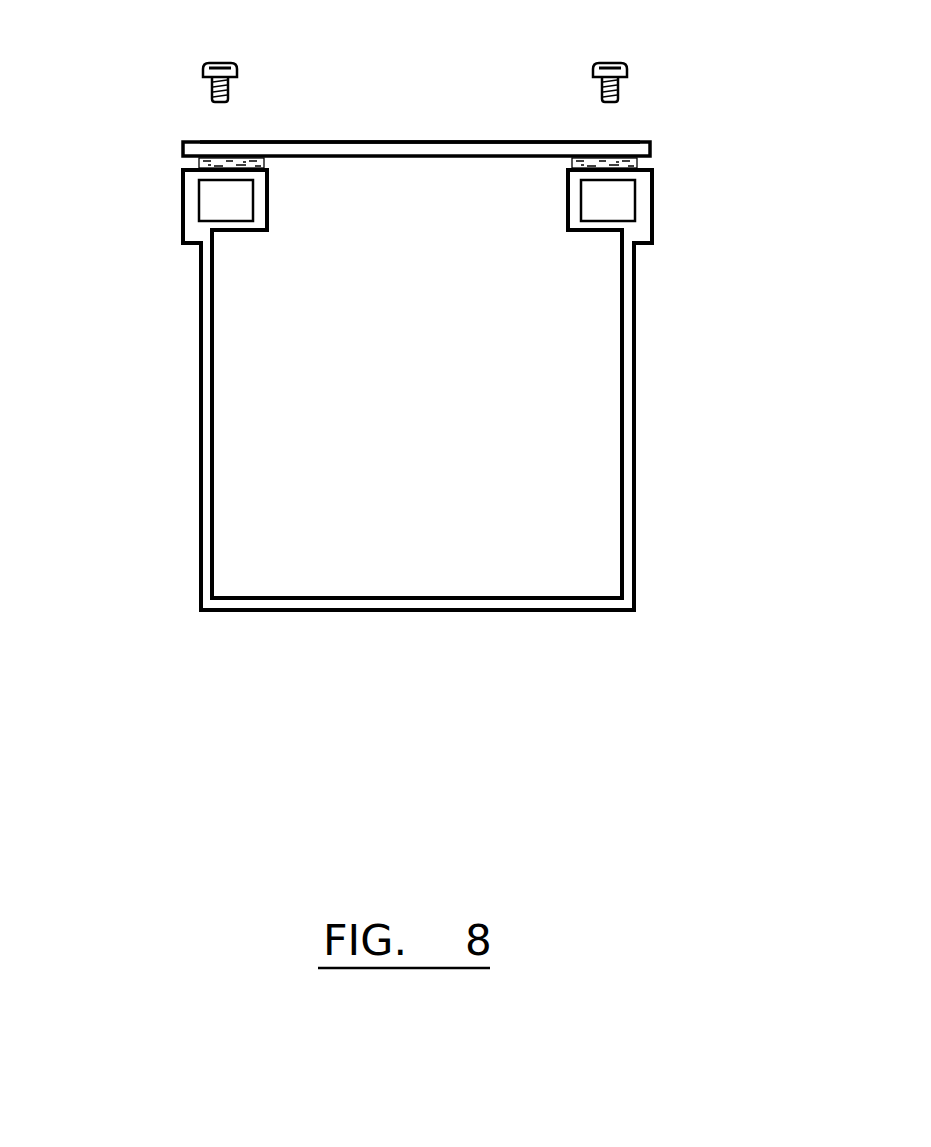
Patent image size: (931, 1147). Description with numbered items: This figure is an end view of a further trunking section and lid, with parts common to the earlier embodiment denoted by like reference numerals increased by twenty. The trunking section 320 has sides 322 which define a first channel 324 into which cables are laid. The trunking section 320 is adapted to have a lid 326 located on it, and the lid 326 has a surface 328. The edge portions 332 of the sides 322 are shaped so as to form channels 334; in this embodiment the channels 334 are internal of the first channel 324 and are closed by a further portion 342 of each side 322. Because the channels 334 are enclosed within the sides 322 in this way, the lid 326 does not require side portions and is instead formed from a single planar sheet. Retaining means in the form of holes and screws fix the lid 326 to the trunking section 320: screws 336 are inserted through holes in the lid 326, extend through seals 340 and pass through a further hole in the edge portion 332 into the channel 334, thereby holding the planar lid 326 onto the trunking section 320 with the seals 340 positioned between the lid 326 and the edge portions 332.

The trunking section 320 is at (431, 450).
The side 322 is at (203, 447).
The first channel 324 is at (290, 488).
The lid 326 is at (366, 130).
The surface 328 is at (487, 143).
The edge portion 332 is at (282, 212).
The channel 334 is at (220, 197).
The screw 336 is at (207, 66).
The seal 340 is at (210, 156).
The further portion 342 is at (202, 218).